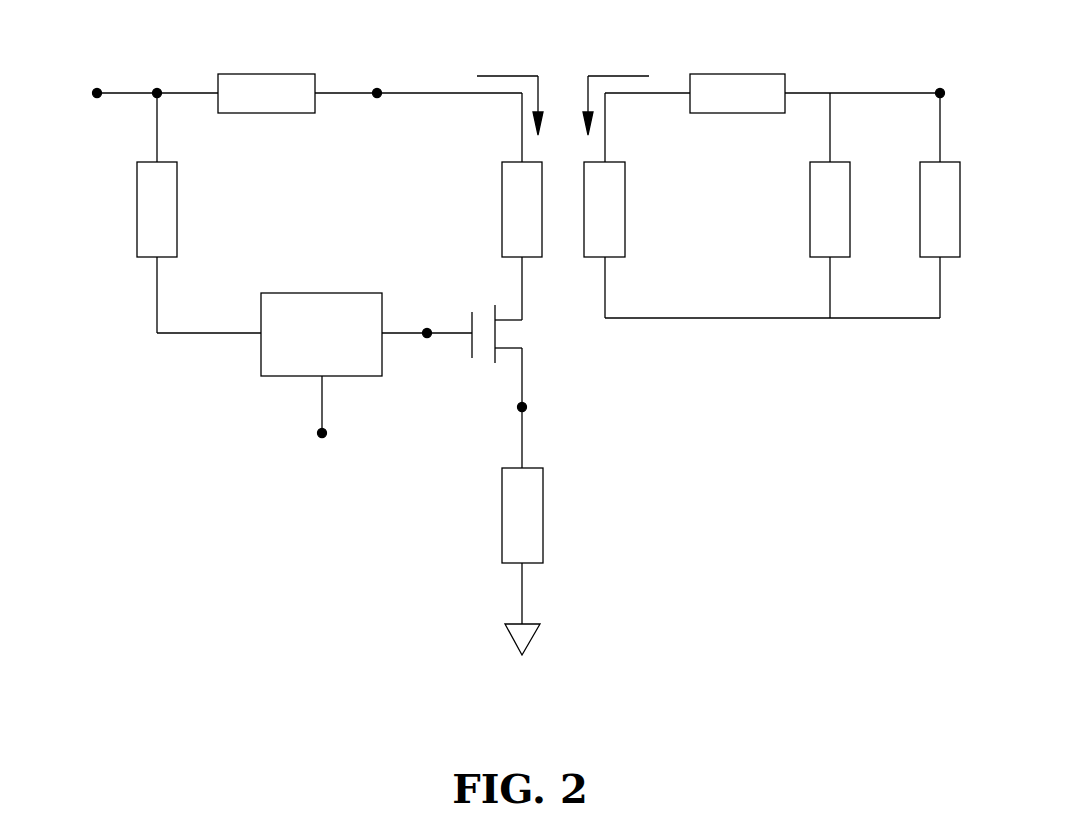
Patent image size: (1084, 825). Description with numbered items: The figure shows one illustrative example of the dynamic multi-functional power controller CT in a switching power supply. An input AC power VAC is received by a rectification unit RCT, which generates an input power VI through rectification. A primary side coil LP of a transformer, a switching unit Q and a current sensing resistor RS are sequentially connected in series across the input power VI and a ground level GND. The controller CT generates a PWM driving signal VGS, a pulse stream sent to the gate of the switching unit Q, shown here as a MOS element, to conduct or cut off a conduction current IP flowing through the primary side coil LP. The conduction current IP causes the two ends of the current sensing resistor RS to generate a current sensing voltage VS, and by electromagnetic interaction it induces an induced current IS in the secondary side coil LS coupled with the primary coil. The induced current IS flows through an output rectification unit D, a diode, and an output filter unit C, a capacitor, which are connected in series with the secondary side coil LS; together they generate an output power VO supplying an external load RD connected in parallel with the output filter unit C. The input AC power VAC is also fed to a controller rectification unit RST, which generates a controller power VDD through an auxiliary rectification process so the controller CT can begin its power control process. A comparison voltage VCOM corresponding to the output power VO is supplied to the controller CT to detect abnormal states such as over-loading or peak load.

The input AC power VAC is at (97, 80).
The rectification unit RCT is at (267, 74).
The input power VI is at (377, 80).
The conduction current IP is at (510, 92).
The induced current IS is at (616, 92).
The output rectification unit D is at (738, 74).
The output power VO is at (941, 80).
The controller rectification unit RST is at (137, 208).
The primary side coil LP is at (502, 208).
The secondary side coil LS is at (625, 210).
The output filter unit C is at (810, 172).
The external load RD is at (920, 170).
The dynamic multi-functional power controller CT is at (322, 293).
The controller power VDD is at (189, 364).
The PWM driving signal VGS is at (426, 353).
The comparison voltage VCOM is at (328, 425).
The switching unit Q is at (482, 310).
The current sensing voltage VS is at (544, 409).
The current sensing resistor RS is at (502, 514).
The ground level GND is at (522, 659).